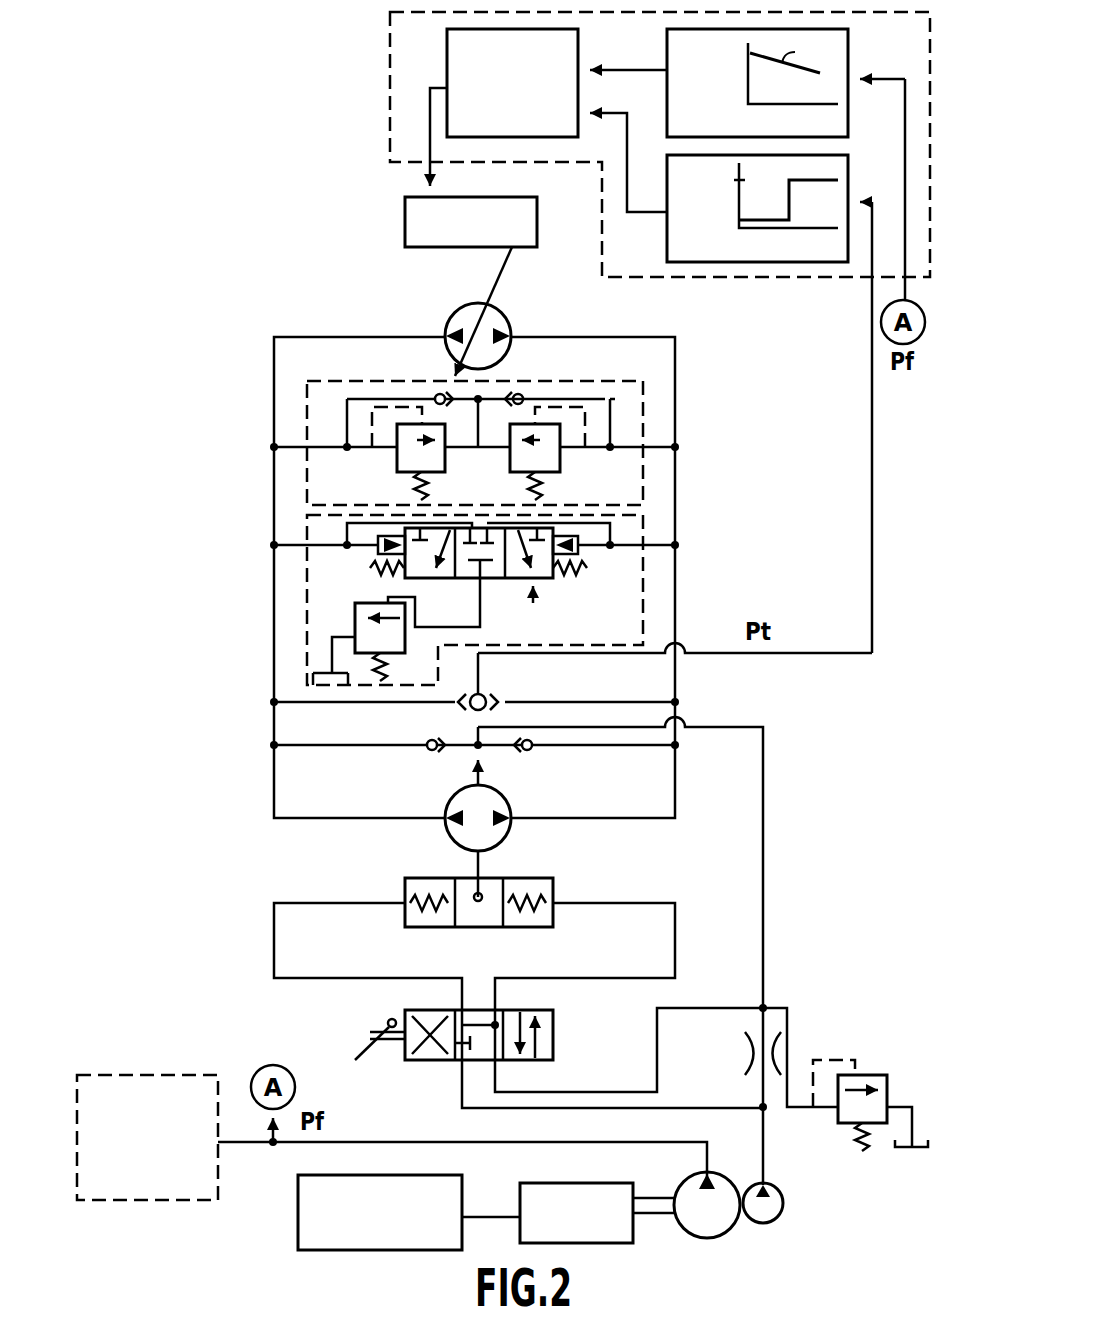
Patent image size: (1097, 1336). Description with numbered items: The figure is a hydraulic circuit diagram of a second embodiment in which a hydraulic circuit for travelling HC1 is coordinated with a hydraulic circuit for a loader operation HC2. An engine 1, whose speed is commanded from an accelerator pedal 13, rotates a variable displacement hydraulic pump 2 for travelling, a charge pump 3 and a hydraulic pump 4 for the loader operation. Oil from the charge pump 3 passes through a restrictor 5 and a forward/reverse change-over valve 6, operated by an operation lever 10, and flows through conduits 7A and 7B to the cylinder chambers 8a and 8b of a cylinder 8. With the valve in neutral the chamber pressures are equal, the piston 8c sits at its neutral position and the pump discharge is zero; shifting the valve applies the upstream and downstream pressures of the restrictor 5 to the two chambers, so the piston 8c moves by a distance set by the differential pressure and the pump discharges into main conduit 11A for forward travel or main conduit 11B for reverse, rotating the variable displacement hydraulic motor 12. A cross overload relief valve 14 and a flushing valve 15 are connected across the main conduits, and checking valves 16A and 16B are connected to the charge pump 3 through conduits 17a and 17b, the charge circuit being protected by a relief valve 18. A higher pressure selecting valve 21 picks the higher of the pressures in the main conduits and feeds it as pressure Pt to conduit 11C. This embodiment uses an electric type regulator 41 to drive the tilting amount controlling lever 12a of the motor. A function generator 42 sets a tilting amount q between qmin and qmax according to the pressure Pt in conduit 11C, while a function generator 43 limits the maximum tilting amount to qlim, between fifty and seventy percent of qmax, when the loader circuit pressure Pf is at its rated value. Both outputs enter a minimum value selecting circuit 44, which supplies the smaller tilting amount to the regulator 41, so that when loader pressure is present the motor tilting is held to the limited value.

The engine 1 is at (520, 1185).
The variable displacement hydraulic pump 2 is at (455, 793).
The charge pump 3 is at (783, 1203).
The hydraulic pump for loader operation 4 is at (718, 1180).
The restrictor 5 is at (745, 1053).
The forward/reverse change-over valve 6 is at (553, 1035).
The conduit 7A is at (274, 930).
The conduit 7B is at (675, 918).
The cylinder 8 is at (517, 903).
The cylinder chamber 8a is at (430, 886).
The cylinder chamber 8b is at (527, 886).
The piston 8c is at (478, 929).
The operation lever 10 is at (386, 1036).
The main conduit 11A is at (274, 493).
The main conduit 11B is at (675, 367).
The conduit 11C is at (872, 462).
The variable displacement hydraulic motor 12 is at (447, 318).
The tilting amount controlling lever 12a is at (500, 293).
The accelerator pedal 13 is at (298, 1215).
The cross overload relief valve 14 is at (643, 425).
The flushing valve 15 is at (643, 520).
The checking valve 16A is at (426, 750).
The checking valve 16B is at (530, 753).
The conduit 17a is at (763, 825).
The conduit 17b is at (763, 1147).
The relief valve for the charging pump 18 is at (857, 1075).
The higher pressure selecting valve 21 is at (458, 706).
The electric type regulator 41 is at (405, 221).
The function generator 42 is at (848, 174).
The function generator 43 is at (848, 48).
The minimum value selecting circuit 44 is at (447, 43).
The hydraulic circuit for travelling HC1 is at (411, 577).
The hydraulic circuit for loader operation HC2 is at (140, 1075).